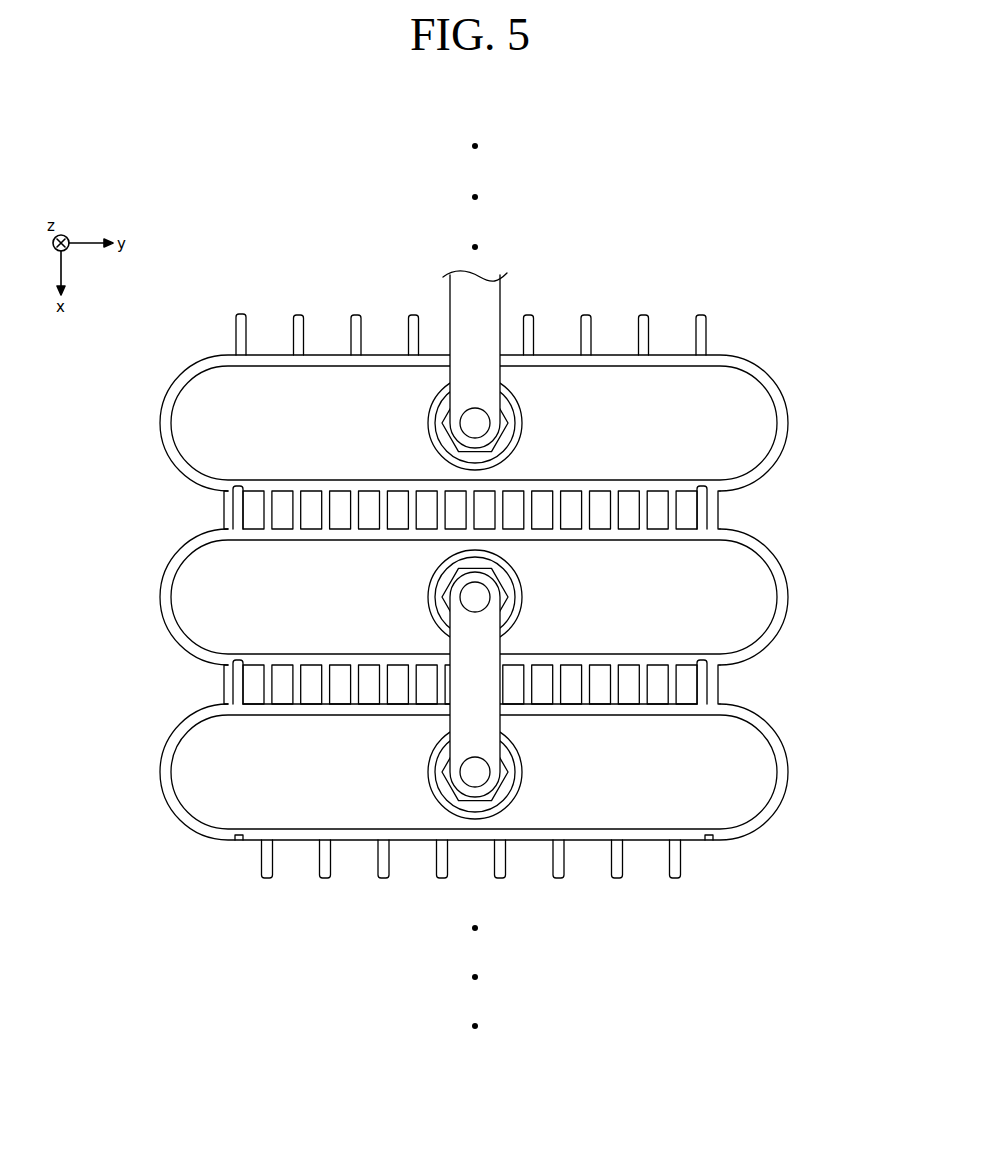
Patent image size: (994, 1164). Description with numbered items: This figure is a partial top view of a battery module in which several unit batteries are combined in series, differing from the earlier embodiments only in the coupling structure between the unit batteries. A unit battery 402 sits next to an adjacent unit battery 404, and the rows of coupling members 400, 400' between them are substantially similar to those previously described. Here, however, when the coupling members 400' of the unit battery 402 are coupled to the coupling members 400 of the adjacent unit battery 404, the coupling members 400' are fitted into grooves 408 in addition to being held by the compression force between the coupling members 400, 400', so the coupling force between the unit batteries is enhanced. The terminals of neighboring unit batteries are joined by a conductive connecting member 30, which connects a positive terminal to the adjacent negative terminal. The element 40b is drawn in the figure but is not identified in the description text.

The conductive connecting member 30 is at (465, 723).
The heat dissipating module 40b is at (794, 586).
The coupling member 400 is at (472, 597).
The coupling member 400' is at (474, 724).
The unit battery 402 is at (798, 790).
The unit battery 404 is at (784, 541).
The groove 408 is at (228, 671).